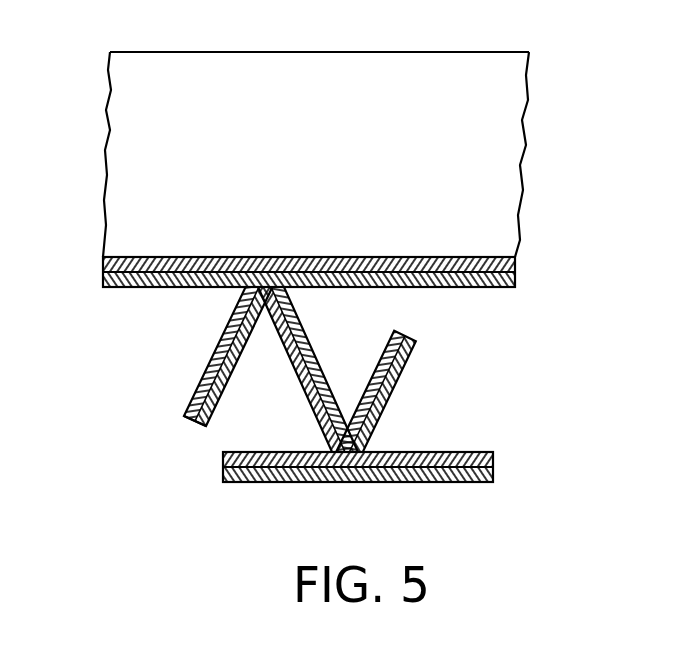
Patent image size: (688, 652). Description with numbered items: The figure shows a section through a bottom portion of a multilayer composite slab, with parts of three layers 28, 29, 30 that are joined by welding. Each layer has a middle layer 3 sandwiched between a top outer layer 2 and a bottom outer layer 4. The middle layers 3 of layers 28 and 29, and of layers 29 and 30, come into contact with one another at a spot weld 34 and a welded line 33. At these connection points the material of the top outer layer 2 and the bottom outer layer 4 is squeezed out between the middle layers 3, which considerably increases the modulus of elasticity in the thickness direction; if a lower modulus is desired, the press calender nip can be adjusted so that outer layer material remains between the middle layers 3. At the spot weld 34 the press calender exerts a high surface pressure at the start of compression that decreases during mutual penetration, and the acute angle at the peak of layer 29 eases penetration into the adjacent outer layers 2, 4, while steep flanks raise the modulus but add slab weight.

The top outer layer 2 is at (218, 343).
The middle layer 3 is at (103, 272).
The bottom outer layer 4 is at (143, 287).
The layer 28 is at (503, 153).
The layer 29 is at (416, 348).
The layer 30 is at (493, 468).
The welded line 33 is at (350, 483).
The spot weld 34 is at (272, 257).